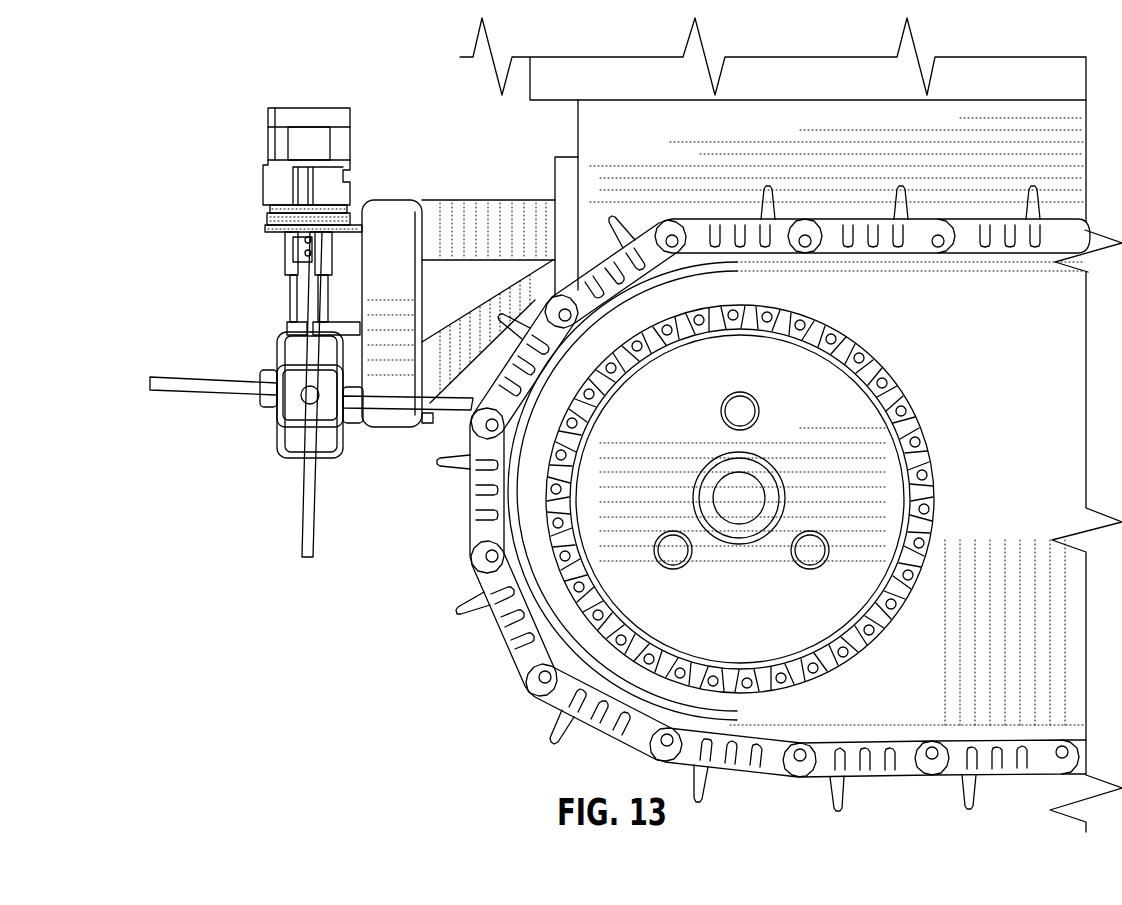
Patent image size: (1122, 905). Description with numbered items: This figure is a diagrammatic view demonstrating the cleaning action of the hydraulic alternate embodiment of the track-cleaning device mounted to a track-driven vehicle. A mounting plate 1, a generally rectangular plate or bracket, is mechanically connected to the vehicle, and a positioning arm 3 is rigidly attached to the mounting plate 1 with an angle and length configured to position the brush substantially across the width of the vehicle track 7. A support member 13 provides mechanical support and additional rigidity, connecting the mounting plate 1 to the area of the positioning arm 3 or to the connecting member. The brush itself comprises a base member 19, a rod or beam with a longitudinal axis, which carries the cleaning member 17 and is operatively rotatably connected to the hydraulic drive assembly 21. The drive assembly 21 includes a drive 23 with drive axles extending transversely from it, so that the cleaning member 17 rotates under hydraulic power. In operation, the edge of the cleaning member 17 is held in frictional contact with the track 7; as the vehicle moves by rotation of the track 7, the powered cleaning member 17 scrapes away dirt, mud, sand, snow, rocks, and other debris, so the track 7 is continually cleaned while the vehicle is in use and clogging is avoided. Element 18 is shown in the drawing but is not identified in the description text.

The mounting plate 1 is at (557, 158).
The positioning arm 3 is at (446, 336).
The track 7 is at (465, 608).
The support member 13 is at (470, 200).
The cleaning member 17 is at (187, 378).
The housing 18 is at (389, 215).
The base member 19 is at (309, 394).
The hydraulic drive assembly 21 is at (268, 108).
The drive 23 is at (268, 140).